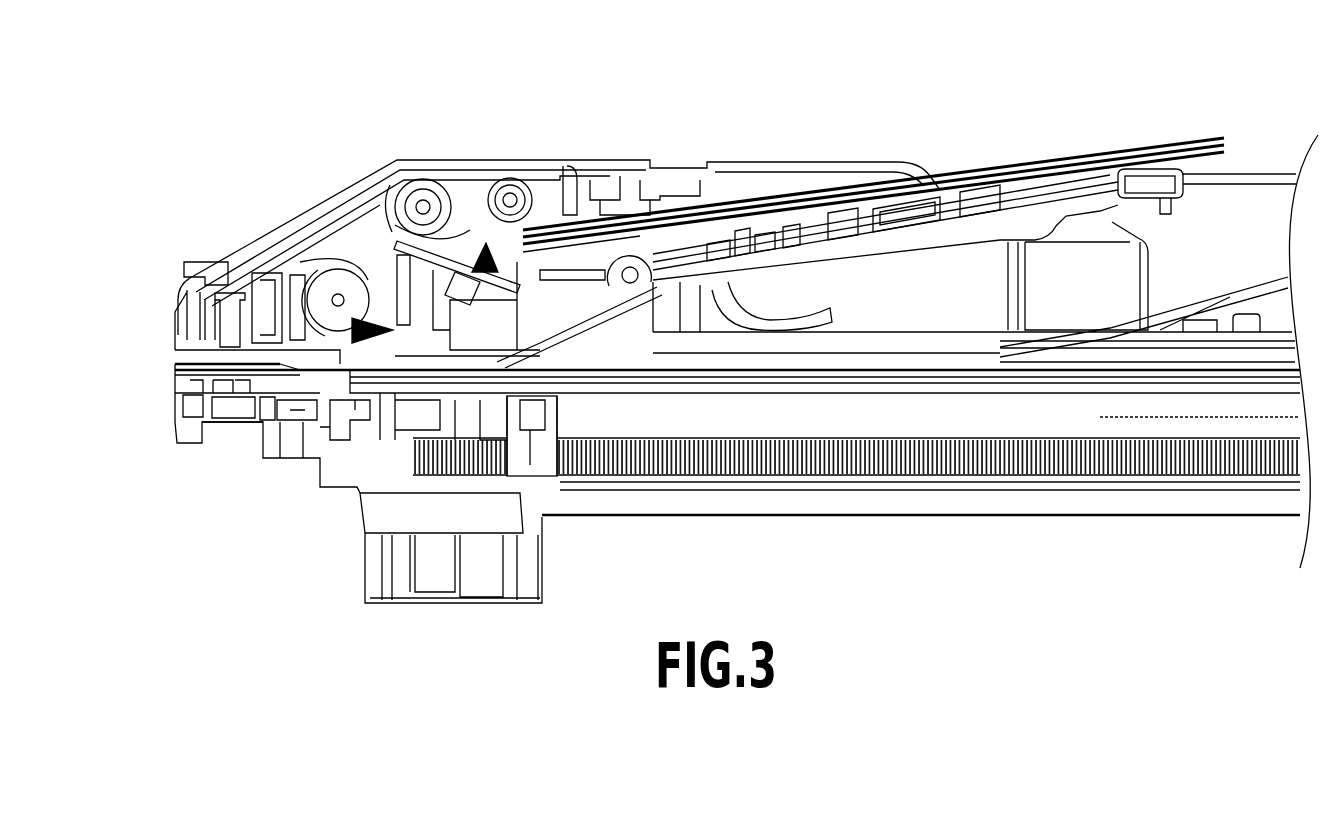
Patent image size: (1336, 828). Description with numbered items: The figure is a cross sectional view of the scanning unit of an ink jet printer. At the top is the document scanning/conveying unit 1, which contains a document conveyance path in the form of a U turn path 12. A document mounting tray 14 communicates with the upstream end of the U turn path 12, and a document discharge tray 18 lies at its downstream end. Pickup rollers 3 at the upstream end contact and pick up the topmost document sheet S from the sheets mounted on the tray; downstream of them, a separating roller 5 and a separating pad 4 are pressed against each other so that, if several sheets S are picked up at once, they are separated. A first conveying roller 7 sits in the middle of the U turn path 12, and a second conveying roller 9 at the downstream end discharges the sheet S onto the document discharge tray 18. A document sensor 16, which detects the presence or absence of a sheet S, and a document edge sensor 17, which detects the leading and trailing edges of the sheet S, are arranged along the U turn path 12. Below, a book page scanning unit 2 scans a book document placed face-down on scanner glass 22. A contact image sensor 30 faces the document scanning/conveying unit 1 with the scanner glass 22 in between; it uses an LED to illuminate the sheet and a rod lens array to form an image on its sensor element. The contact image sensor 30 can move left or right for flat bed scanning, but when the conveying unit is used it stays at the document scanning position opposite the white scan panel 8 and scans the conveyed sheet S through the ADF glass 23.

The document scanning/conveying unit 1 is at (631, 71).
The book page scanning unit 2 is at (888, 425).
The pickup rollers 3 is at (510, 190).
The separating pad 4 is at (460, 253).
The separating roller 5 is at (428, 185).
The first conveying roller 7 is at (333, 283).
The white scan panel 8 is at (425, 355).
The second conveying roller 9 is at (628, 266).
The U turn path 12 is at (333, 247).
The document mounting tray 14 is at (858, 222).
The document sensor 16 is at (490, 263).
The document edge sensor 17 is at (357, 338).
The document discharge tray 18 is at (837, 350).
The scanner glass 22 is at (787, 378).
The ADF glass 23 is at (350, 375).
The contact image sensor 30 is at (418, 407).
The document sheet S is at (765, 200).